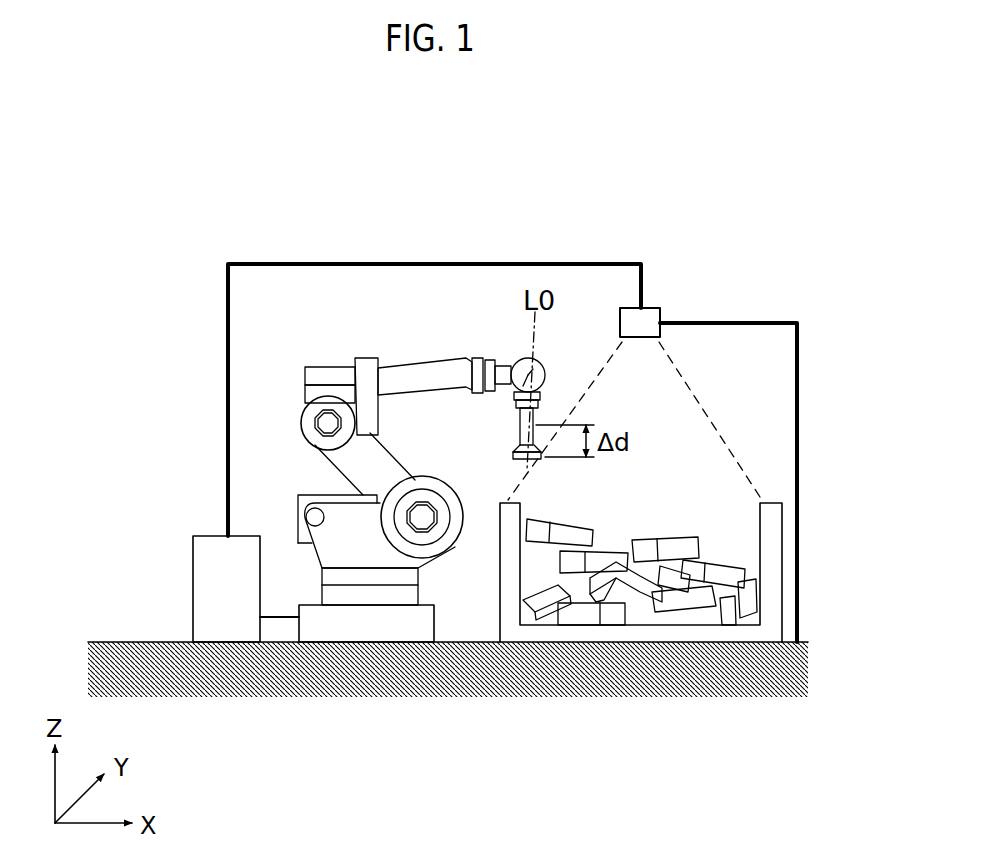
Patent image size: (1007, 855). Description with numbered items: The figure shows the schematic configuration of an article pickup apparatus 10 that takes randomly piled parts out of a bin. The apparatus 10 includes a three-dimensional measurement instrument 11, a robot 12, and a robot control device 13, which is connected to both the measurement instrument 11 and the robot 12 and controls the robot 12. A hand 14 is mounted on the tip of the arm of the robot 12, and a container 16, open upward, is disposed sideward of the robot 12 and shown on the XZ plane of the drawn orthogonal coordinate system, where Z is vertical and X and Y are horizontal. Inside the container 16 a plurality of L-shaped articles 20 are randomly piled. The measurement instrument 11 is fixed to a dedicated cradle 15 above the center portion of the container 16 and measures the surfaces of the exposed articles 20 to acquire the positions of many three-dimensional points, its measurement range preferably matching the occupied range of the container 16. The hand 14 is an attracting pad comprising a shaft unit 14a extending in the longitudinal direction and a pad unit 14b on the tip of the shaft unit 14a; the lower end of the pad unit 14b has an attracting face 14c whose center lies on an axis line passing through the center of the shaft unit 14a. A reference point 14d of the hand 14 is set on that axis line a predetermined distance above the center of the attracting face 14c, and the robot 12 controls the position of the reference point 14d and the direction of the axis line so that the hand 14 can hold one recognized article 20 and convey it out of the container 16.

The article pickup apparatus 10 is at (164, 346).
The three-dimensional measurement instrument 11 is at (648, 307).
The robot 12 is at (437, 365).
The robot control device 13 is at (193, 563).
The hand 14 is at (503, 418).
The shaft unit 14a is at (540, 418).
The pad unit 14b is at (514, 448).
The attracting face 14c is at (521, 460).
The reference point 14d is at (519, 428).
The dedicated cradle 15 is at (713, 322).
The container 16 is at (766, 503).
The articles 20 is at (725, 565).